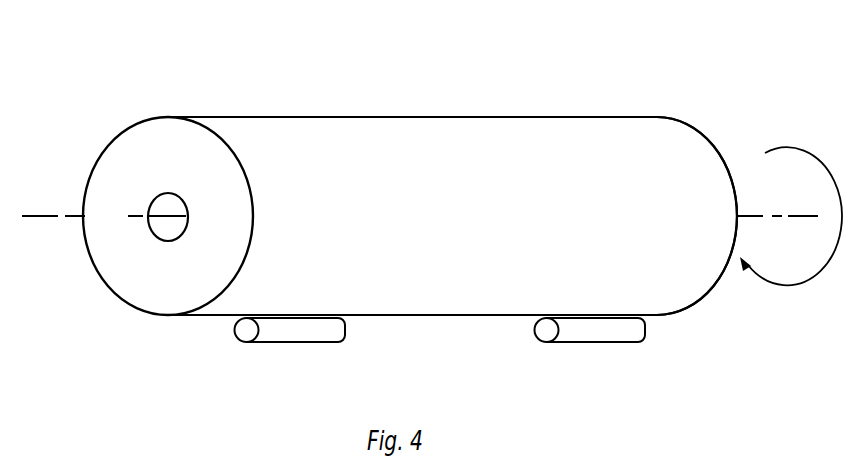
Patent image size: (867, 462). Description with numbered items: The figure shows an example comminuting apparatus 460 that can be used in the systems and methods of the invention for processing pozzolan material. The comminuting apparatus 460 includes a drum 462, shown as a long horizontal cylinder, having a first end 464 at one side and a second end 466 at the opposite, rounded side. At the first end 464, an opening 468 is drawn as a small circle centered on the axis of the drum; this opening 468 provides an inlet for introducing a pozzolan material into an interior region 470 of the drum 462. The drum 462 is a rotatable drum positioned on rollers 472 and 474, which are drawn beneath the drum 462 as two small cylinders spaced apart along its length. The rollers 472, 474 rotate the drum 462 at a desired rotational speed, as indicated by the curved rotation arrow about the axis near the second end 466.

The comminuting apparatus 460 is at (605, 48).
The drum 462 is at (362, 116).
The first end 464 is at (128, 127).
The second end 466 is at (683, 123).
The opening 468 is at (170, 242).
The interior region 470 is at (162, 223).
The roller 472 is at (295, 343).
The roller 474 is at (577, 343).